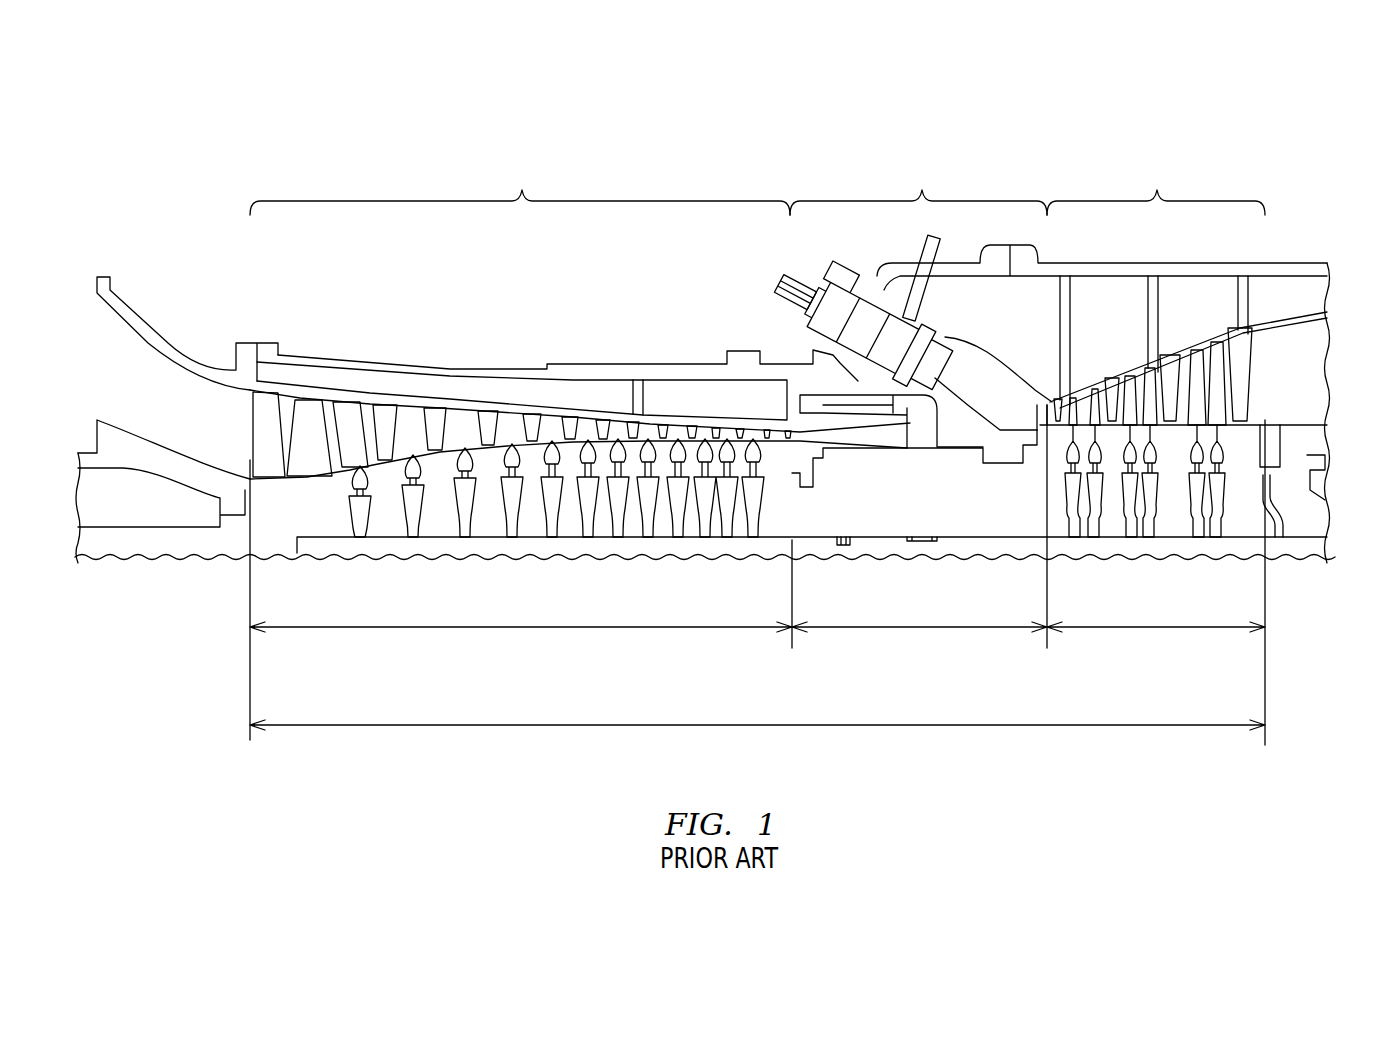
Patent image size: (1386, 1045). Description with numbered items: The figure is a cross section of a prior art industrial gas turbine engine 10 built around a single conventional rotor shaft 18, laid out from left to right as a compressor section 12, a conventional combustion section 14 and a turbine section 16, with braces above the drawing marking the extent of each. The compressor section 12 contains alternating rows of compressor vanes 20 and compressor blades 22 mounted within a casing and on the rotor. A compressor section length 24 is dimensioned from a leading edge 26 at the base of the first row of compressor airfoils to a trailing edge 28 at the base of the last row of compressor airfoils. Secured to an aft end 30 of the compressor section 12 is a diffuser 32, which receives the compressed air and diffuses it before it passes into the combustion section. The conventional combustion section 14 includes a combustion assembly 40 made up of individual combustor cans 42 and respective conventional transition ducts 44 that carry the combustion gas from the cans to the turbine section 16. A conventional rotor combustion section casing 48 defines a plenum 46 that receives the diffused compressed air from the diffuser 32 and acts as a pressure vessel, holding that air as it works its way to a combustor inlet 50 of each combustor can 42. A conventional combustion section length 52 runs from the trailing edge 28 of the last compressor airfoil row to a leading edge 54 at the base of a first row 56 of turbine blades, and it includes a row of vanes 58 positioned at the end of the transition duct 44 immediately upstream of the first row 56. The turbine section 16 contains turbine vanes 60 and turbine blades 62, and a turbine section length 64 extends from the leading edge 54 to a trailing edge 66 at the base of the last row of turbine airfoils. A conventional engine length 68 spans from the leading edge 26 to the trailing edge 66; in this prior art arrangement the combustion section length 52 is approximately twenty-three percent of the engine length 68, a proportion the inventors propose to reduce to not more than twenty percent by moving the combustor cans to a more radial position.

The industrial gas turbine engine 10 is at (184, 207).
The compressor section 12 is at (522, 197).
The conventional combustion section 14 is at (922, 197).
The turbine section 16 is at (1157, 197).
The conventional rotor shaft 18 is at (425, 548).
The compressor vanes 20 is at (263, 430).
The compressor blades 22 is at (310, 442).
The compressor section length 24 is at (520, 626).
The leading edge 26 is at (250, 675).
The trailing edge 28 is at (792, 585).
The aft end 30 is at (792, 572).
The diffuser 32 is at (845, 433).
The combustion assembly 40 is at (985, 335).
The combustor cans 42 is at (927, 323).
The conventional transition ducts 44 is at (977, 393).
The plenum 46 is at (1037, 366).
The conventional rotor combustion section casing 48 is at (952, 264).
The combustor inlet 50 is at (838, 311).
The conventional combustion section length 52 is at (920, 626).
The leading edge 54 is at (1048, 583).
The first row of turbine blades 56 is at (1053, 423).
The row of vanes 58 is at (1007, 463).
The turbine vanes 60 is at (1207, 363).
The turbine blades 62 is at (1148, 418).
The turbine section length 64 is at (1157, 626).
The trailing edge 66 is at (1265, 673).
The conventional engine length 68 is at (757, 724).